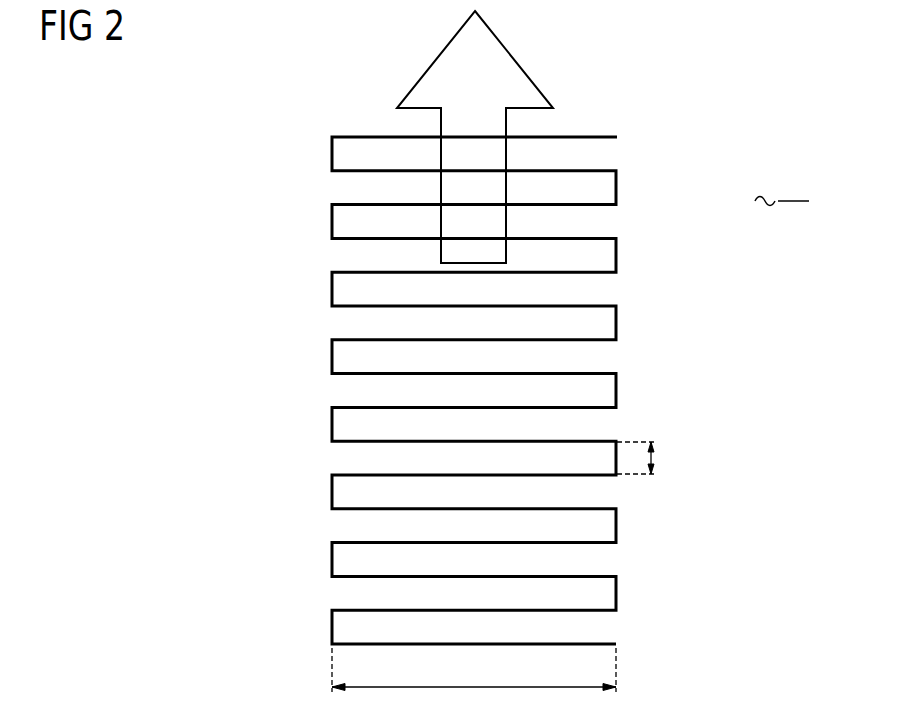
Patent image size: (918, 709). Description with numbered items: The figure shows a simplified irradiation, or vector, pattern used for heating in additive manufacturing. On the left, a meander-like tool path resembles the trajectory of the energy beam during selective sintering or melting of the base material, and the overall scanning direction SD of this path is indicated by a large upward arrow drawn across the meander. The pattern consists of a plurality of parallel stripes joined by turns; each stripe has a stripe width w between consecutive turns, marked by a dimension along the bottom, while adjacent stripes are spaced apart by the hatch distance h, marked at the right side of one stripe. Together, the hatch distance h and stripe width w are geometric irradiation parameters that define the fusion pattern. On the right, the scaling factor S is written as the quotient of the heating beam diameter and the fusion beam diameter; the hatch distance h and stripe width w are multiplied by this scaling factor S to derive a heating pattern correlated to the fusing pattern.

The scanning direction SD is at (515, 58).
The hatch distance h is at (644, 459).
The stripe width w is at (474, 670).
The scaling factor S is at (772, 198).